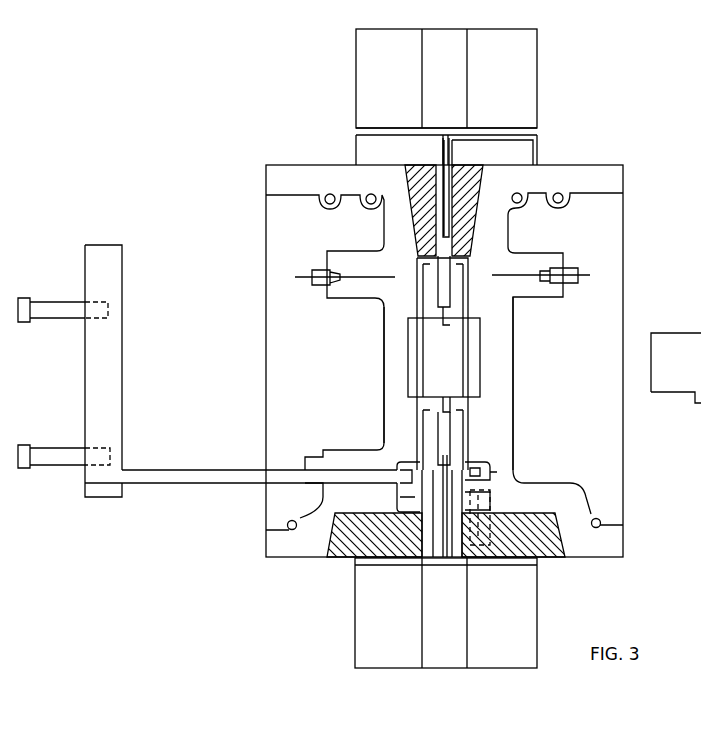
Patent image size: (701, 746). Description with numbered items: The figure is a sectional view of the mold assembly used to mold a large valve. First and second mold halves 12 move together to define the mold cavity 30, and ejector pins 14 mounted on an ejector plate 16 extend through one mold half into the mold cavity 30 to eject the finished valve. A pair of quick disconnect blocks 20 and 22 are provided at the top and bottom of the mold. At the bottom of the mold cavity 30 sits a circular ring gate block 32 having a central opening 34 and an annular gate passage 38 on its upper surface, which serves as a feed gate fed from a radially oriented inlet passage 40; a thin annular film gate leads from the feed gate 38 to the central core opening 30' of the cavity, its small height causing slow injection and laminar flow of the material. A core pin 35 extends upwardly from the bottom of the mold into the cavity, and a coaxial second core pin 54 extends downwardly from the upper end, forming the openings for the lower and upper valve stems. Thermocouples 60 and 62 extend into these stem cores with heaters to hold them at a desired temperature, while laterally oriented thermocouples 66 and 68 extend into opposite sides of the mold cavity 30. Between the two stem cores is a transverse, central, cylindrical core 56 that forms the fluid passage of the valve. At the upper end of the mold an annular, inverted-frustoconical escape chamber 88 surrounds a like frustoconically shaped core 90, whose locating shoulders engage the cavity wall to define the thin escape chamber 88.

The mold half 12 is at (628, 237).
The ejector pin 14 is at (200, 466).
The ejector plate 16 is at (115, 392).
The quick disconnect block 20 is at (531, 66).
The quick disconnect block 22 is at (528, 637).
The mold cavity 30 is at (436, 383).
The central core opening 30' is at (503, 477).
The ring gate block 32 is at (552, 556).
The central opening 34 is at (420, 440).
The core pin 35 is at (398, 560).
The annular gate passage 38 is at (360, 513).
The inlet passage 40 is at (490, 522).
The second core pin 54 is at (462, 262).
The central cylindrical core 56 is at (482, 350).
The thermocouple 60 is at (470, 560).
The thermocouple 62 is at (538, 132).
The thermocouple 66 is at (520, 290).
The thermocouple 68 is at (355, 274).
The escape chamber 88 is at (476, 200).
The frustoconical core 90 is at (414, 186).